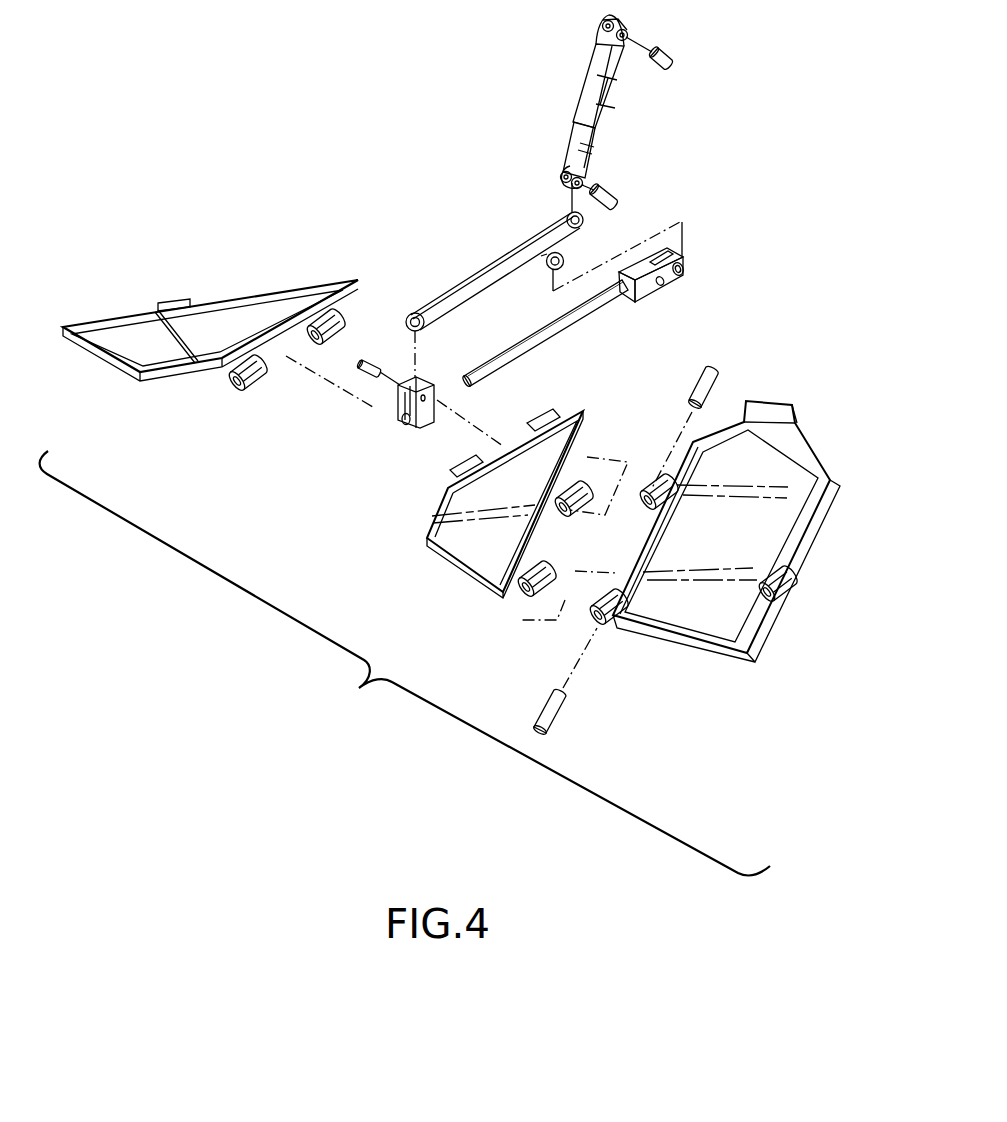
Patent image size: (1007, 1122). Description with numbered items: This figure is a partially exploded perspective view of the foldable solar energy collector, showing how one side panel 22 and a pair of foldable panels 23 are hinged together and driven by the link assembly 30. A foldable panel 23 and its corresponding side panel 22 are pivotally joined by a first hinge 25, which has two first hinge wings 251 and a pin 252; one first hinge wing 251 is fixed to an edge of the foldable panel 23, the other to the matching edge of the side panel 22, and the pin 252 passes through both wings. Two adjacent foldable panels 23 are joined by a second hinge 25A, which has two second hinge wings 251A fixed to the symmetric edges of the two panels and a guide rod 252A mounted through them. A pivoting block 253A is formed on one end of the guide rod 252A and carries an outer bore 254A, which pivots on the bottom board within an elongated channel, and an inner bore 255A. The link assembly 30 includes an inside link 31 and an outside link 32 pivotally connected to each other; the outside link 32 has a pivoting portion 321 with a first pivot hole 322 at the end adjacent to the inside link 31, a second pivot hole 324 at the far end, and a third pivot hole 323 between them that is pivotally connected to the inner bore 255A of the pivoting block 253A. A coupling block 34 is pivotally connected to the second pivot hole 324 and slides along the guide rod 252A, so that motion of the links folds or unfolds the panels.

The side panel 22 is at (745, 570).
The foldable panel 23 is at (473, 540).
The first hinge 25 is at (538, 637).
The first hinge wing 251 is at (596, 628).
The pin 252 is at (555, 725).
The second hinge 25A is at (226, 404).
The second hinge wing 251A is at (254, 380).
The guide rod 252A is at (560, 330).
The pivoting block 253A is at (648, 290).
The outer bore 254A is at (673, 256).
The inner bore 255A is at (686, 270).
The link assembly 30 is at (472, 132).
The inside link 31 is at (597, 64).
The outside link 32 is at (490, 277).
The pivoting portion 321 is at (563, 258).
The first pivot hole 322 is at (586, 190).
The third pivot hole 323 is at (552, 270).
The second pivot hole 324 is at (412, 316).
The coupling block 34 is at (418, 418).